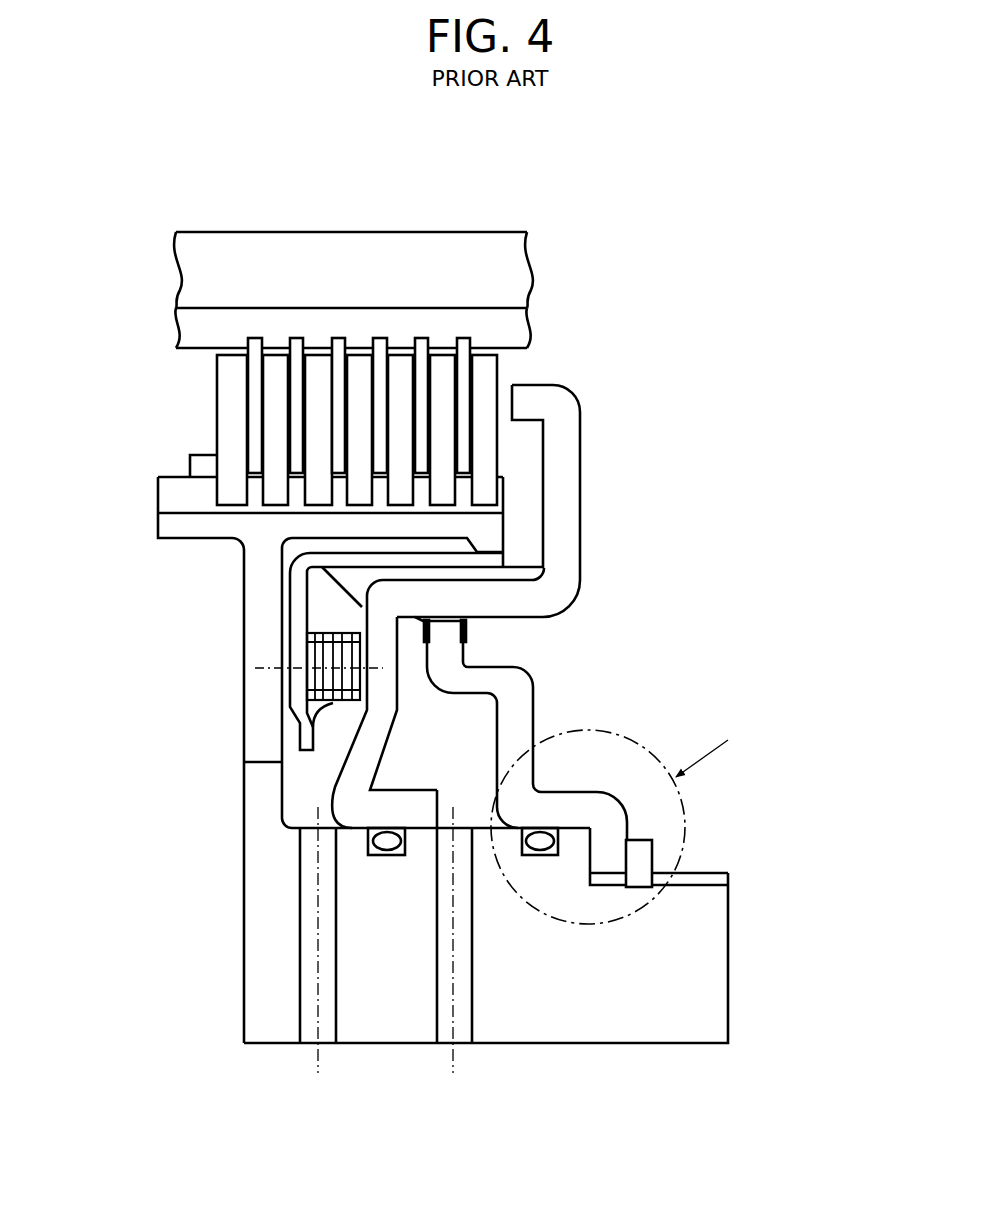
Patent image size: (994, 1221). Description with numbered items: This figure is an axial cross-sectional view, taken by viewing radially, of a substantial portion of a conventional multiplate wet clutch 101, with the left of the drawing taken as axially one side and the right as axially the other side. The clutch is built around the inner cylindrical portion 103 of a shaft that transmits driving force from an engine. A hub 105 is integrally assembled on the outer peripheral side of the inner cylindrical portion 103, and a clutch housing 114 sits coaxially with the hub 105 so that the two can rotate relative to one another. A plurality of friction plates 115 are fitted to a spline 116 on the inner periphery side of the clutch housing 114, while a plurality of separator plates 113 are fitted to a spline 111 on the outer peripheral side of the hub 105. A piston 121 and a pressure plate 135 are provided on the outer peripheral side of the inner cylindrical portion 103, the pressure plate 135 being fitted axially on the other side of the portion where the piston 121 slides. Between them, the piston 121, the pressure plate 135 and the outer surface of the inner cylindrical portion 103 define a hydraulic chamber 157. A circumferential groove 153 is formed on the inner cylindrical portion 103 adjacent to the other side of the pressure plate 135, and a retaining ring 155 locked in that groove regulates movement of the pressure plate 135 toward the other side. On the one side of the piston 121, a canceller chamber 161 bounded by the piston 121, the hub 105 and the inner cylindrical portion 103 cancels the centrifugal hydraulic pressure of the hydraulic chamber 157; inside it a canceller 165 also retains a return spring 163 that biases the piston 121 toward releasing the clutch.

The multiplate wet clutch 101 is at (562, 196).
The inner cylindrical portion 103 is at (598, 1023).
The hub 105 is at (262, 613).
The spline 111 is at (172, 493).
The separator plates 113 is at (442, 370).
The clutch housing 114 is at (222, 258).
The friction plates 115 is at (340, 347).
The spline 116 is at (197, 328).
The piston 121 is at (587, 522).
The pressure plate 135 is at (555, 677).
The circumferential groove 153 is at (638, 885).
The retaining ring 155 is at (636, 852).
The hydraulic chamber 157 is at (432, 768).
The canceller chamber 161 is at (298, 780).
The return spring 163 is at (310, 727).
The canceller 165 is at (297, 640).